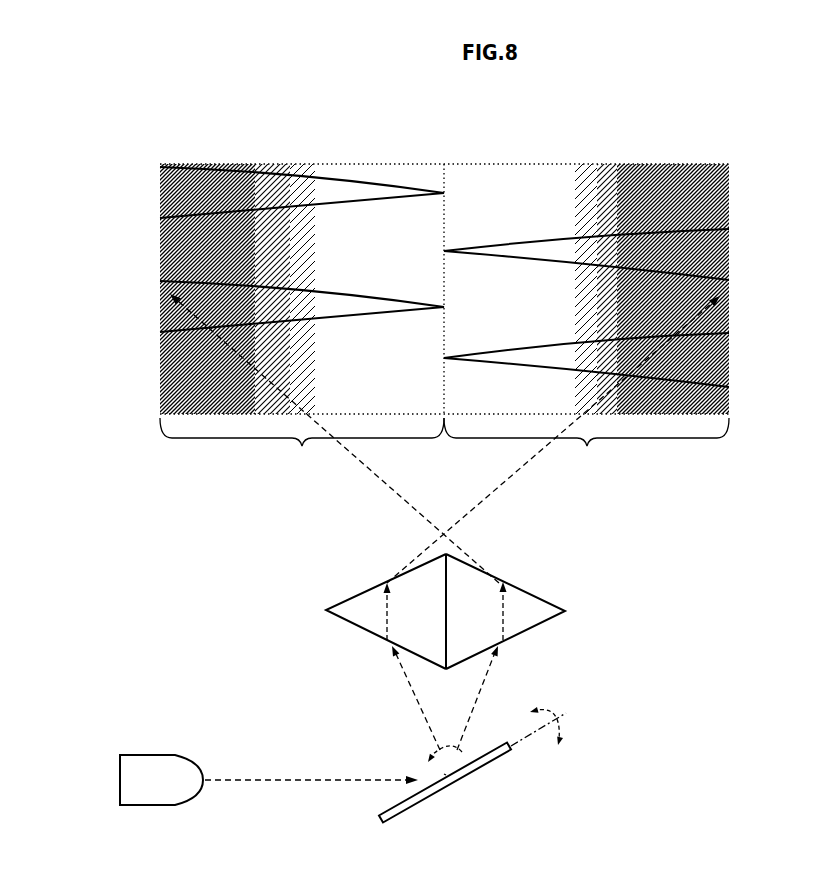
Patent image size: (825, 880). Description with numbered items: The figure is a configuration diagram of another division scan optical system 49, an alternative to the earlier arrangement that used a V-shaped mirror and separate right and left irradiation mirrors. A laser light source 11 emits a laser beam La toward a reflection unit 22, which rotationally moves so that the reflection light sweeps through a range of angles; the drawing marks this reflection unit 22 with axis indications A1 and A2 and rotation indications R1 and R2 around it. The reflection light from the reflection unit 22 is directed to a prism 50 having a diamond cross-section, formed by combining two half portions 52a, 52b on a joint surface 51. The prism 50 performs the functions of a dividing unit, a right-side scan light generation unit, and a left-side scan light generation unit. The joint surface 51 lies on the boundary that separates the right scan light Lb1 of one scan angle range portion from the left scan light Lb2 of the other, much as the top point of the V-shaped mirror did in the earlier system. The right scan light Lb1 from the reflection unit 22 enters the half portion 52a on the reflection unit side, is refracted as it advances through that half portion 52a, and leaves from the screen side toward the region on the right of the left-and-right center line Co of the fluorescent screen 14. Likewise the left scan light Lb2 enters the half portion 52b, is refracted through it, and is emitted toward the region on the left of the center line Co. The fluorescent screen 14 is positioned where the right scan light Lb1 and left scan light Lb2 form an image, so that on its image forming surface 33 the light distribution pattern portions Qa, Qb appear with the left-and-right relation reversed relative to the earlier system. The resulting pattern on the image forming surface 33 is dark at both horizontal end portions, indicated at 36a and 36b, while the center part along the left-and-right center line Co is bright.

The fluorescent screen 14 is at (124, 232).
The dark region (left) 36b is at (168, 186).
The dark region (right) 36a is at (733, 356).
The image forming surface 33 is at (730, 211).
The division scan optical system 49 is at (316, 572).
The prism 50 is at (548, 594).
The joint surface 51 is at (452, 593).
The half portion 52a is at (343, 619).
The half portion 52b is at (545, 622).
The laser light source 11 is at (143, 755).
The reflection unit 22 is at (426, 798).
The left-and-right center line Co is at (445, 185).
The light distribution pattern portion Qa is at (586, 445).
The light distribution pattern portion Qb is at (302, 445).
The laser beam La is at (262, 778).
The right scan light Lb1 is at (392, 704).
The left scan light Lb2 is at (497, 703).
The first rotation direction R1 is at (427, 752).
The second rotation direction R2 is at (565, 735).
The first rotation axis A1 is at (452, 786).
The second rotation axis A2 is at (566, 713).